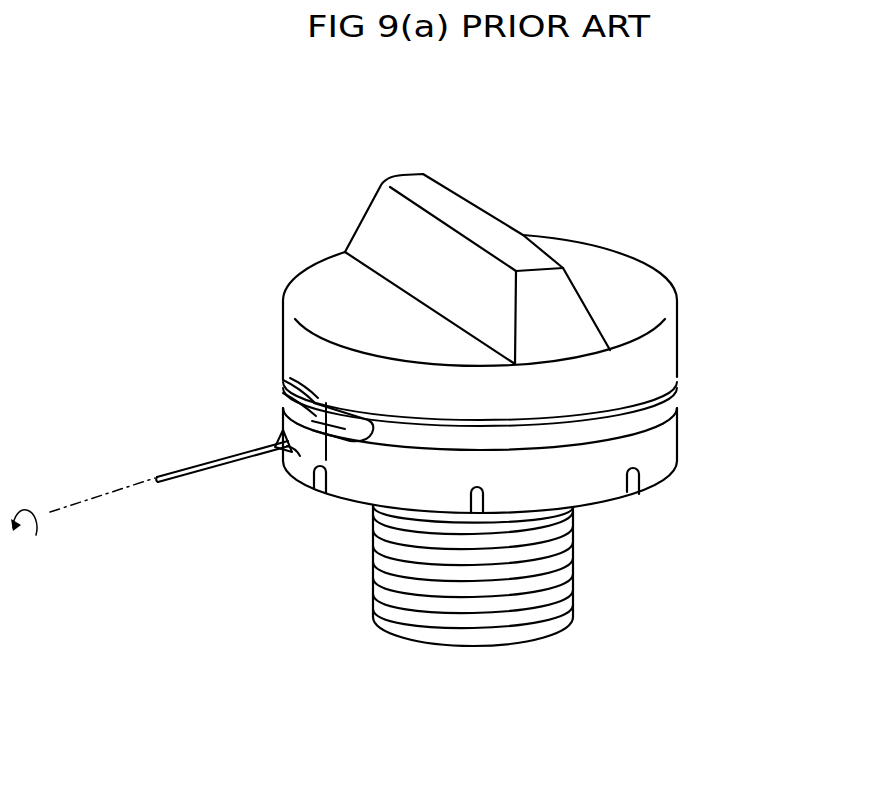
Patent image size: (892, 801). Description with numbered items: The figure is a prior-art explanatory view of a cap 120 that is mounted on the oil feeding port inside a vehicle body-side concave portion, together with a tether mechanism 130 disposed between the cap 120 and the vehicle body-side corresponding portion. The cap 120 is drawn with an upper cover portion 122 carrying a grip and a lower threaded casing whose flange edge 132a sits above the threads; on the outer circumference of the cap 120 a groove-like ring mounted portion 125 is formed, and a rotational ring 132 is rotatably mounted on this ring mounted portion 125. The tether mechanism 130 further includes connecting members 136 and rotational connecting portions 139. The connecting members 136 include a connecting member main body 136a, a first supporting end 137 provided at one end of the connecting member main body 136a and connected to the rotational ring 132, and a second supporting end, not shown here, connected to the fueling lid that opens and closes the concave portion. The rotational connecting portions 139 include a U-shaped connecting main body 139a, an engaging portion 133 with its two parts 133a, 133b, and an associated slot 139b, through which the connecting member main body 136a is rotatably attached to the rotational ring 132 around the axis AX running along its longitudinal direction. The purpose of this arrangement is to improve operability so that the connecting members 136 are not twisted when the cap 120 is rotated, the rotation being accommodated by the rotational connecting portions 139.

The cap 120 is at (646, 207).
The cap body / cover with handle 122 is at (655, 298).
The ring mounted portion 125 is at (660, 412).
The tether mechanism 130 is at (237, 300).
The rotational ring 132 is at (403, 437).
The flange of casing 132a is at (655, 405).
The engaging portion 133 is at (192, 317).
The first engaging piece 133a is at (283, 378).
The second engaging piece 133b is at (283, 400).
The connecting members 136 is at (247, 516).
The connecting member main body 136a is at (227, 463).
The first supporting end 137 is at (287, 428).
The rotational connecting portions 139 is at (138, 337).
The U-shaped connecting main body 139a is at (292, 451).
The ratchet slot 139b is at (338, 483).
The rotation axis AX is at (107, 477).